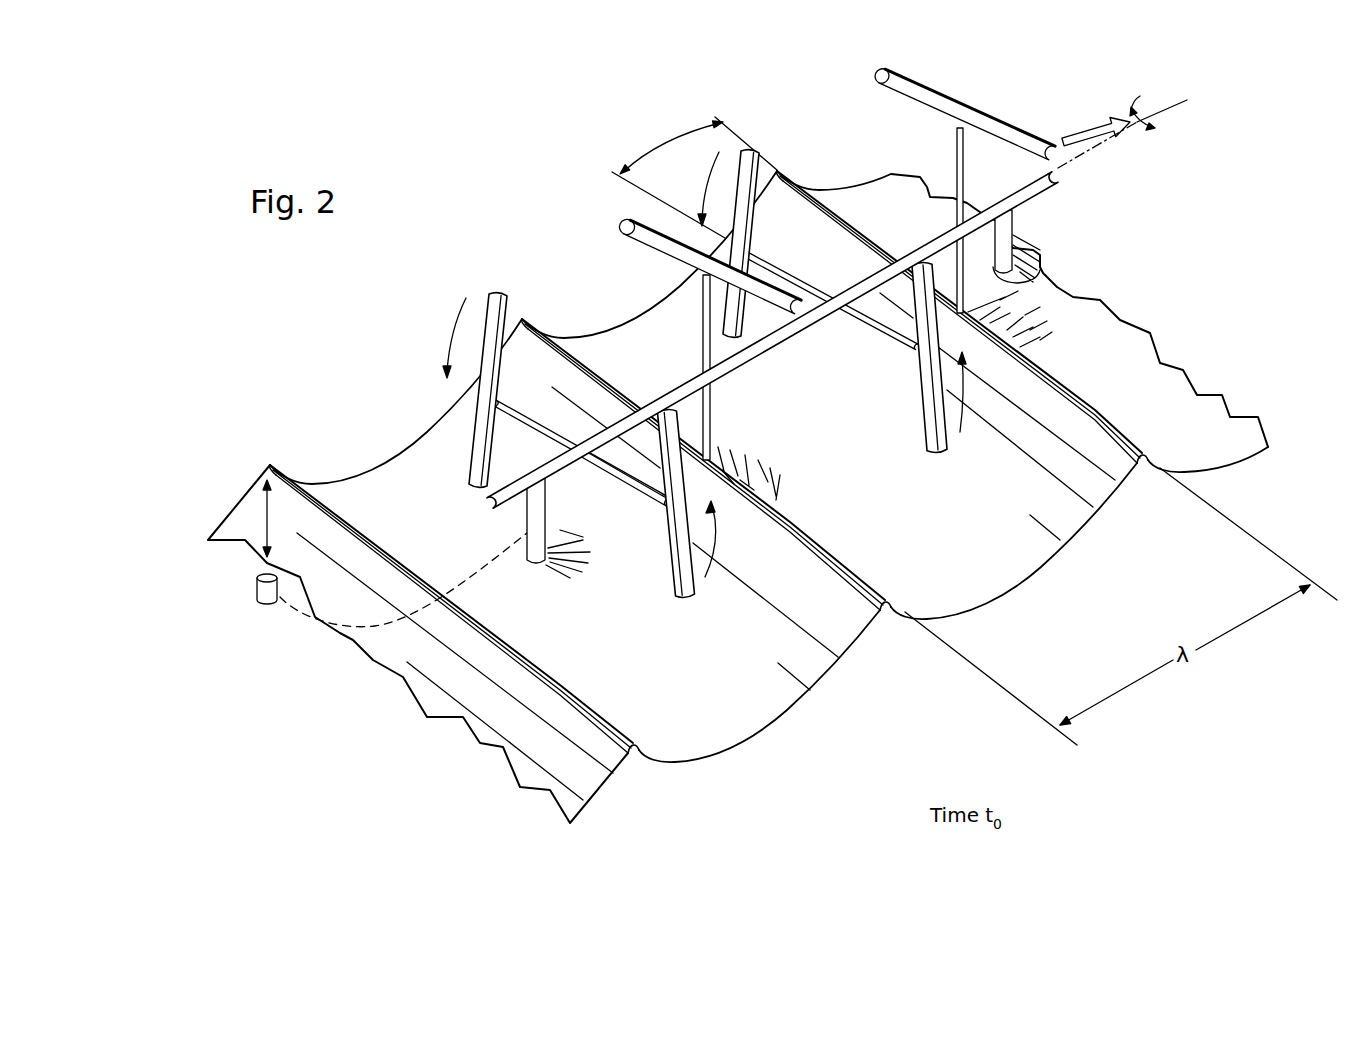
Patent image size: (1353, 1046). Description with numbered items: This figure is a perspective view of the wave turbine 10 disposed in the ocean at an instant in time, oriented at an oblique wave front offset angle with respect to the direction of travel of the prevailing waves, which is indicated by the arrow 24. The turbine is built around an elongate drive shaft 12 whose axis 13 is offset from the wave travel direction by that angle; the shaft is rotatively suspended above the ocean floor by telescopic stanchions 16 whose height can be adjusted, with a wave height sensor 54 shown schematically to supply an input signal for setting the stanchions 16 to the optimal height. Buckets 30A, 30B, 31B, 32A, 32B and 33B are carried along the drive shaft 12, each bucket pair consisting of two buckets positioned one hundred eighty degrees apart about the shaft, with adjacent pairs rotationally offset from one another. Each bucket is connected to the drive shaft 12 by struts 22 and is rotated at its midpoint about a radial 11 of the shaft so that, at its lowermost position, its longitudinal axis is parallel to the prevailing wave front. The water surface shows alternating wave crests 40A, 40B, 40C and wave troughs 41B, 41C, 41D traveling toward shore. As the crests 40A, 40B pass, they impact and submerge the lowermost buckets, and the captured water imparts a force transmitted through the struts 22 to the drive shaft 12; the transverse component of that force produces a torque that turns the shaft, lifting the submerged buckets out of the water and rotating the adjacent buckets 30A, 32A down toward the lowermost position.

The wave turbine 10 is at (259, 325).
The radial 11 is at (637, 186).
The drive shaft 12 is at (727, 374).
The axis 13 is at (1077, 163).
The stanchions 16 is at (545, 507).
The struts 22 is at (545, 426).
The arrow 24 is at (1085, 132).
The bucket 30A is at (470, 434).
The bucket 30B is at (670, 580).
The bucket 31B is at (652, 252).
The bucket 32A is at (782, 168).
The bucket 32B is at (925, 428).
The bucket 33B is at (948, 97).
The wave crest 40A is at (636, 752).
The wave crest 40B is at (884, 606).
The wave crest 40C is at (1141, 460).
The wave trough 41B is at (748, 747).
The wave trough 41C is at (984, 608).
The wave trough 41D is at (852, 186).
The wave height sensor 54 is at (255, 583).